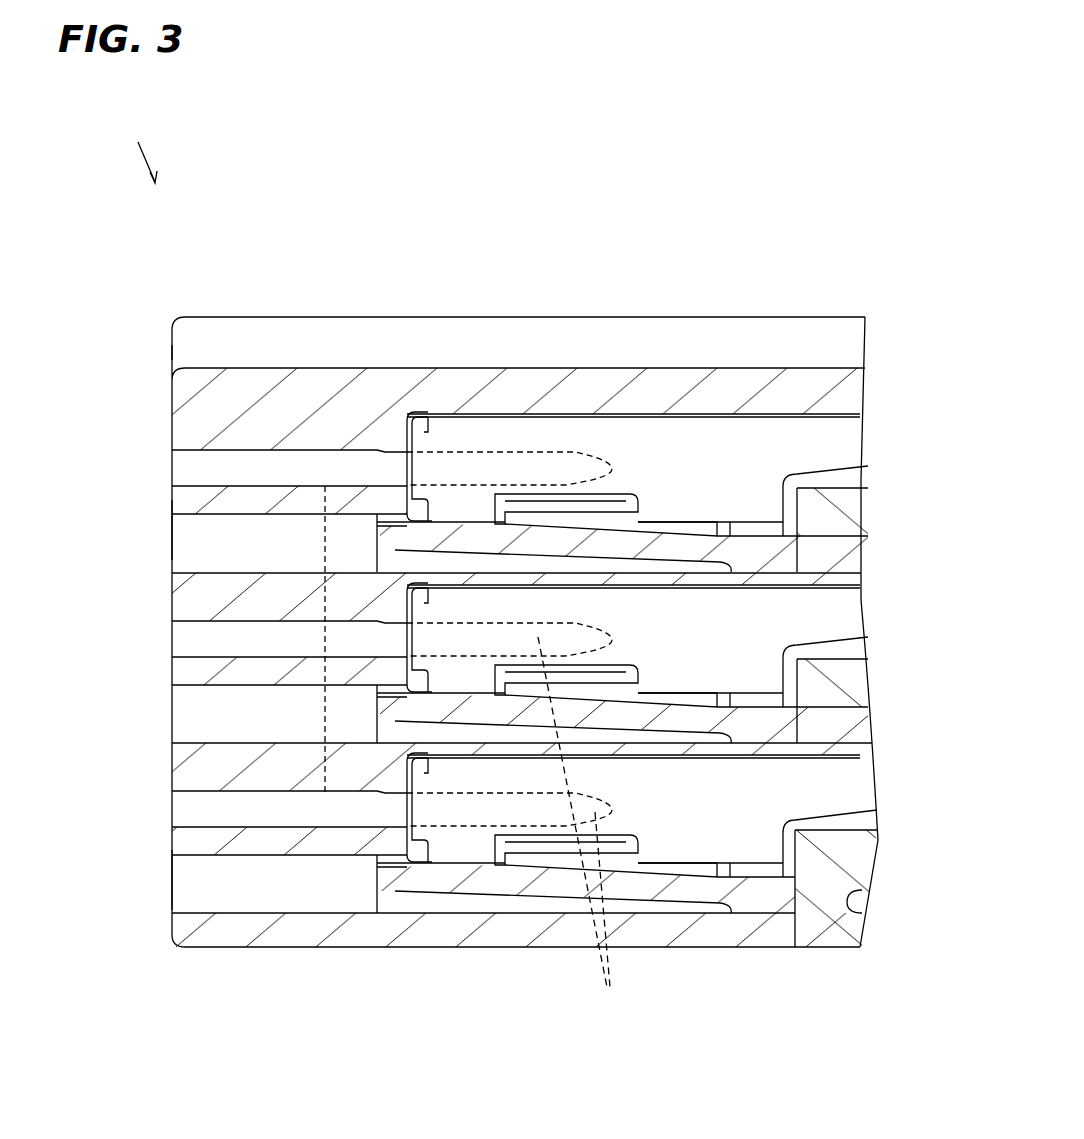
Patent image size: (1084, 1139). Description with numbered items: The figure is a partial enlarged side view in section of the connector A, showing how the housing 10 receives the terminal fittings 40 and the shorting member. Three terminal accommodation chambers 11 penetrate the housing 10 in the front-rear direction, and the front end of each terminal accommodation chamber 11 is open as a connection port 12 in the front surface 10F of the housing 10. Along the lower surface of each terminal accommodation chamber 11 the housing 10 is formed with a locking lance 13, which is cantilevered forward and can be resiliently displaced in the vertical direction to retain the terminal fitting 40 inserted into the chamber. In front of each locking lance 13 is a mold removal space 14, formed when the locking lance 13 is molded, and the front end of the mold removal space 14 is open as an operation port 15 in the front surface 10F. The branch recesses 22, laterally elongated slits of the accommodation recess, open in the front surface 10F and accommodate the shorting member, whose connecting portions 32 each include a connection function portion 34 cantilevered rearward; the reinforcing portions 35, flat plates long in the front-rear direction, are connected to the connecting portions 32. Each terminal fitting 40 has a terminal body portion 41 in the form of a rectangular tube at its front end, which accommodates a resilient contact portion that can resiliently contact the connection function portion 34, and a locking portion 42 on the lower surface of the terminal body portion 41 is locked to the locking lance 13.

The housing 10 is at (738, 385).
The front surface 10F is at (172, 412).
The terminal accommodation chamber 11 is at (692, 415).
The connection port 12 is at (410, 636).
The locking lance 13 is at (565, 527).
The mold removal space 14 is at (330, 530).
The operation port 15 is at (180, 530).
The branch recess 22 is at (220, 448).
The connecting portion 32 is at (582, 841).
The connection function portion 34 is at (517, 450).
The reinforcing portion 35 is at (271, 465).
The terminal fitting 40 is at (845, 612).
The terminal body portion 41 is at (765, 460).
The locking portion 42 is at (483, 850).
The connector A is at (139, 148).